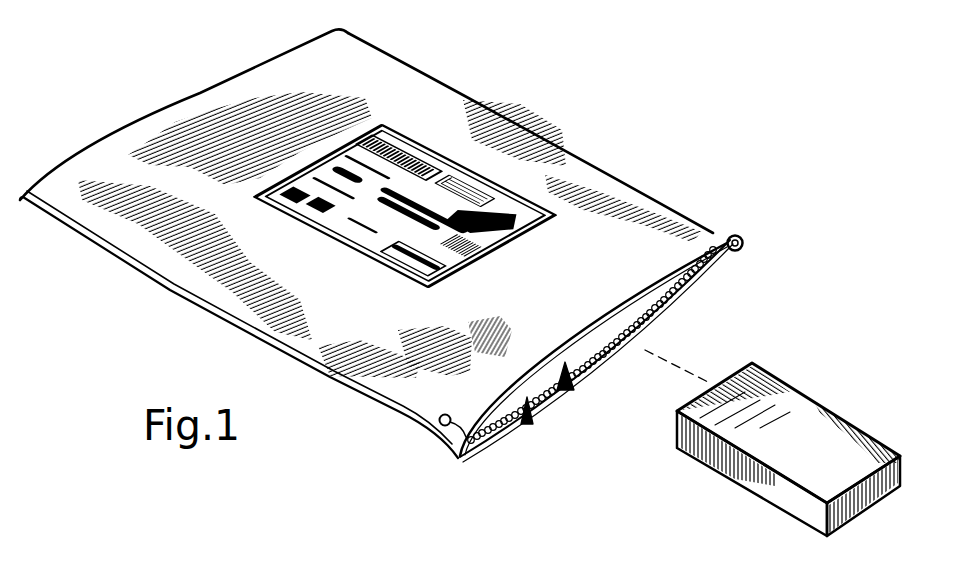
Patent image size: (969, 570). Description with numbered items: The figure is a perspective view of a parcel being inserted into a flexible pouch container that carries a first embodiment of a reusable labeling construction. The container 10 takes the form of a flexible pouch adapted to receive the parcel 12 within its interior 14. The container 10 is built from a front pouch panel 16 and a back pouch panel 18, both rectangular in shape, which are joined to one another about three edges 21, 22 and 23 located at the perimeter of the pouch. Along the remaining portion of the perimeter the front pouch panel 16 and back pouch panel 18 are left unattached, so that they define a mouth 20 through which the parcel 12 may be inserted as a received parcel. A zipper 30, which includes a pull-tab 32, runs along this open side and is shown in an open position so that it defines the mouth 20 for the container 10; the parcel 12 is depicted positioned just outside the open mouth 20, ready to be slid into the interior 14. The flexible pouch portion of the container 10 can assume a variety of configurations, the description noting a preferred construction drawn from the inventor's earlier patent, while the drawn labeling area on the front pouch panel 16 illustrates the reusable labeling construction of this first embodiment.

The container 10 is at (612, 72).
The parcel 12 is at (797, 420).
The interior 14 is at (568, 380).
The front pouch panel 16 is at (337, 372).
The back pouch panel 18 is at (643, 281).
The mouth 20 is at (532, 428).
The edge 21 is at (578, 156).
The edge 22 is at (197, 96).
The edge 23 is at (170, 288).
The zipper 30 is at (620, 280).
The pull-tab 32 is at (737, 234).